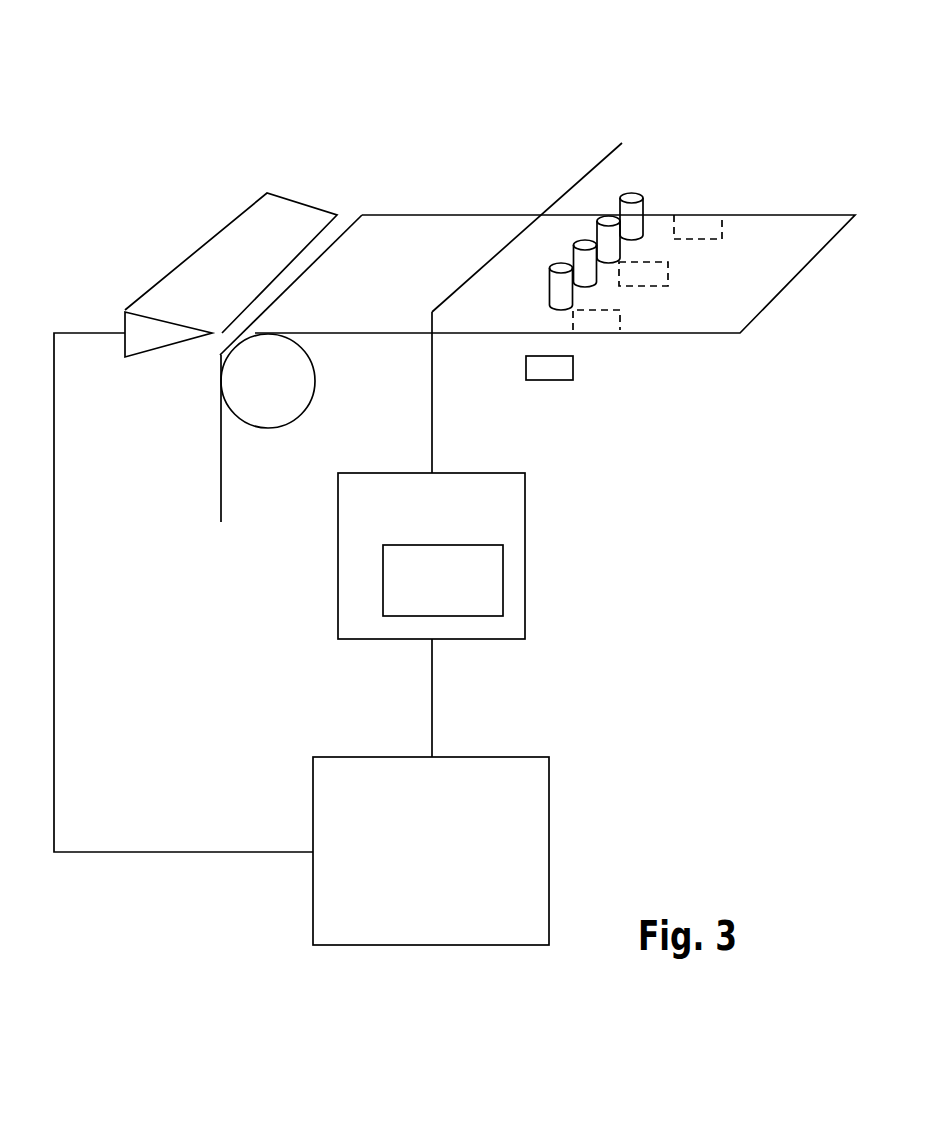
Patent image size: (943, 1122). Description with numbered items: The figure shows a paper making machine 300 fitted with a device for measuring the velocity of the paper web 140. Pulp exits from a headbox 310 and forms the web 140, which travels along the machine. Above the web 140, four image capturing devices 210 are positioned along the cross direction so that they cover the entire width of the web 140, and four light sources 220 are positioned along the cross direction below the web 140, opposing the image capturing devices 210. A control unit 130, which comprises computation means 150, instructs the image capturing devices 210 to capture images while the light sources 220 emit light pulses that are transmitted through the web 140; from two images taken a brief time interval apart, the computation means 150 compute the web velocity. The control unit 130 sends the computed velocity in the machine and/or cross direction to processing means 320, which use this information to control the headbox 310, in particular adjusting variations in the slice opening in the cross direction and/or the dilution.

The paper making machine 300 is at (454, 480).
The headbox 310 is at (172, 240).
The paper web 140 is at (408, 238).
The image capturing devices 210 is at (597, 208).
The light sources 220 is at (645, 358).
The control unit 130 is at (338, 570).
The computation means 150 is at (443, 580).
The processing means 320 is at (431, 851).